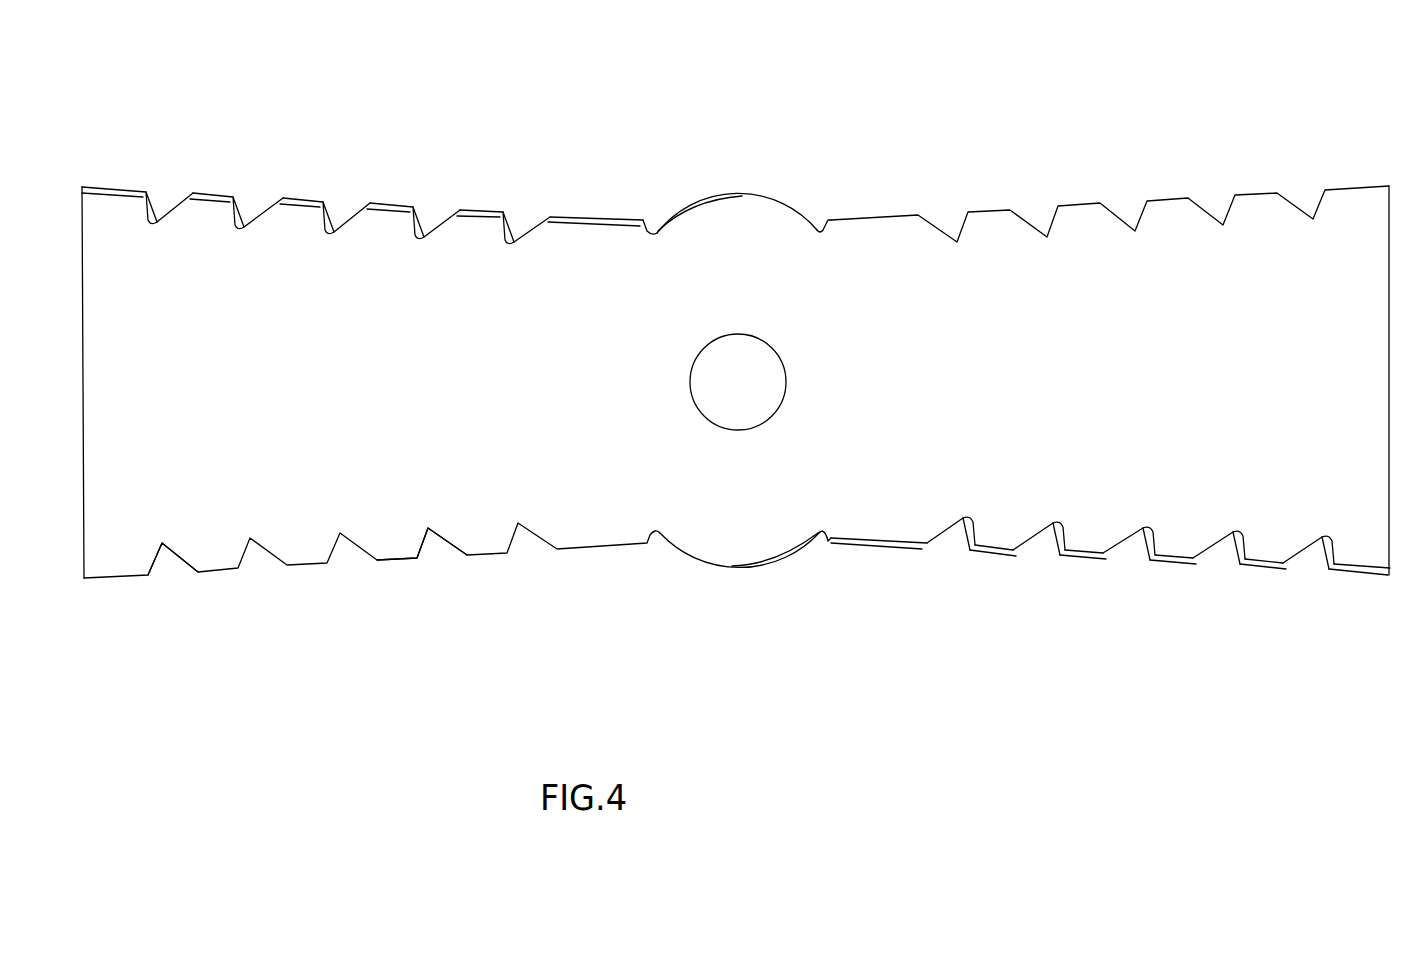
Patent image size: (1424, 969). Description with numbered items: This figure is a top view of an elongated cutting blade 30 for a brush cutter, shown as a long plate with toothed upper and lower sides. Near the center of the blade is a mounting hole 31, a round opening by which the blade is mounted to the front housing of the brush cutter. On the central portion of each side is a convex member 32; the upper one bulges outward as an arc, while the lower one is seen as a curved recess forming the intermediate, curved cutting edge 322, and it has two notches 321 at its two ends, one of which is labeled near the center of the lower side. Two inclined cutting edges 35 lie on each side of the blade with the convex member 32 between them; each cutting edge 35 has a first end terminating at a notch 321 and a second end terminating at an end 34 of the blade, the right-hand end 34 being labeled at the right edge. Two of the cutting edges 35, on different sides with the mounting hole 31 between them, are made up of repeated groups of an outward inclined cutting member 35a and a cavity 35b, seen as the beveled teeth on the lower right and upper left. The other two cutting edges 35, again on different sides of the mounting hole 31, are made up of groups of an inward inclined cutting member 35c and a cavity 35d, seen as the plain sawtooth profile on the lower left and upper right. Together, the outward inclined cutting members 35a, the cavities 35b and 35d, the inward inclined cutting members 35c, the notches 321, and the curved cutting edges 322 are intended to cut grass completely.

The elongated cutting blade 30 is at (143, 465).
The mounting hole 31 is at (775, 377).
The convex member 32 is at (755, 197).
The notch 321 is at (822, 533).
The intermediate, curved cutting edge 322 is at (770, 562).
The end 34 is at (1389, 310).
The inclined cutting edge 35 is at (1087, 558).
The outward inclined cutting member 35a is at (1255, 567).
The cavity 35b is at (948, 538).
The inward inclined cutting member 35c is at (397, 562).
The cavity 35d is at (170, 557).